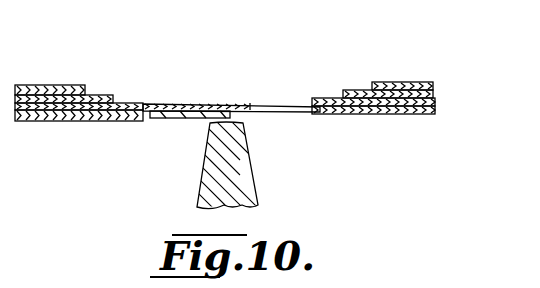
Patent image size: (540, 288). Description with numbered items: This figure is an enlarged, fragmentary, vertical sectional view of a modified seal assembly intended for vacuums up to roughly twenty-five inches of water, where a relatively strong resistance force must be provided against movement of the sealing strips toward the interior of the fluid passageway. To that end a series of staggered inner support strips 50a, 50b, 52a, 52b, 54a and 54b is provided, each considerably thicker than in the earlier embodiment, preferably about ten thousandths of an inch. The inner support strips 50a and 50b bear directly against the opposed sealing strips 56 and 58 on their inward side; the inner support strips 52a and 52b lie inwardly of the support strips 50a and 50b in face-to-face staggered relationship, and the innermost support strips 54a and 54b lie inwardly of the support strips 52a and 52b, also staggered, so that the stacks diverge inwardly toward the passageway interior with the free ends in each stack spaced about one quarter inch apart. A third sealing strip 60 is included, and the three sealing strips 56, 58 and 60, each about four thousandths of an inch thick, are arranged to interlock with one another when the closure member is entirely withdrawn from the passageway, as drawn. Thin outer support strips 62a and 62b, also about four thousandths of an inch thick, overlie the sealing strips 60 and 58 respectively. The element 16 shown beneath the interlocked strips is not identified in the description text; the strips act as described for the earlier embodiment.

The support block 16 is at (247, 187).
The inner support strip 50a is at (138, 96).
The inner support strip 50b is at (322, 98).
The inner support strip 52a is at (100, 93).
The inner support strip 52b is at (362, 90).
The innermost support strip 54a is at (43, 85).
The innermost support strip 54b is at (415, 82).
The sealing strip 56 is at (167, 105).
The sealing strip 58 is at (298, 109).
The third sealing strip 60 is at (163, 119).
The outer support strip 62a is at (28, 122).
The outer support strip 62b is at (388, 116).